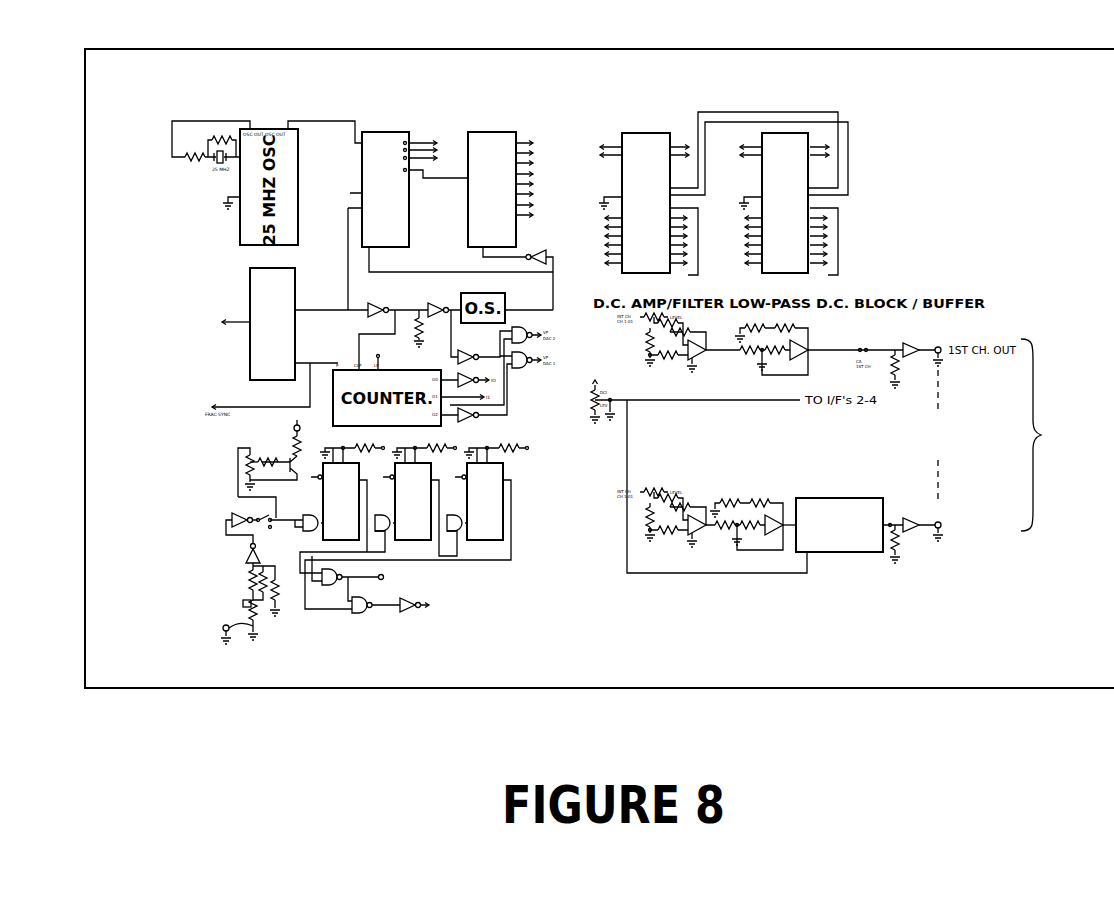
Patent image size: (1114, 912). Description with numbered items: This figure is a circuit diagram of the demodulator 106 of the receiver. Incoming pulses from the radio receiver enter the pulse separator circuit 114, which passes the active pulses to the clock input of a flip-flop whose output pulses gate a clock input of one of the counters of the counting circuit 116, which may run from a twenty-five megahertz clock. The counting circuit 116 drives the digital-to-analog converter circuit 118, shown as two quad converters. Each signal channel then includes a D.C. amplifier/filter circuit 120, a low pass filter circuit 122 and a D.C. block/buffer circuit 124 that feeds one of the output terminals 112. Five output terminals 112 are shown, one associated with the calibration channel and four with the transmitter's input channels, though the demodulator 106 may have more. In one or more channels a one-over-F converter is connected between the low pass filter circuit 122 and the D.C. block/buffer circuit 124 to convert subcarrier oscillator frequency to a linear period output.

The demodulator 106 is at (212, 48).
The counting circuit 116 is at (427, 133).
The digital-to-analog converter circuit 118 is at (747, 112).
The pulse separator circuit 114 is at (493, 587).
The D.C. amplifier/filter circuit 120 is at (682, 548).
The low pass filter circuit 122 is at (760, 550).
The D.C. block/buffer circuit 124 is at (905, 565).
The output terminals 112 is at (1000, 435).